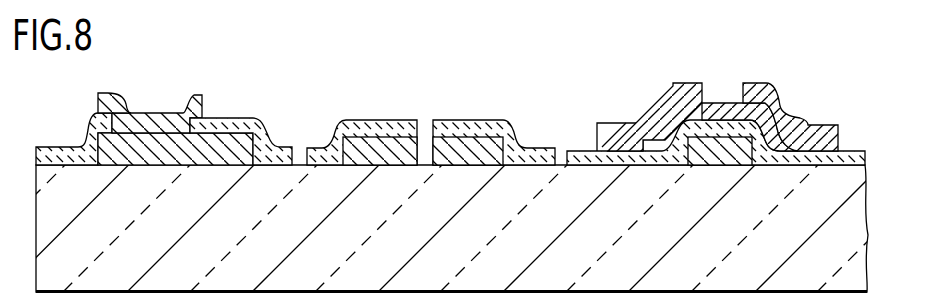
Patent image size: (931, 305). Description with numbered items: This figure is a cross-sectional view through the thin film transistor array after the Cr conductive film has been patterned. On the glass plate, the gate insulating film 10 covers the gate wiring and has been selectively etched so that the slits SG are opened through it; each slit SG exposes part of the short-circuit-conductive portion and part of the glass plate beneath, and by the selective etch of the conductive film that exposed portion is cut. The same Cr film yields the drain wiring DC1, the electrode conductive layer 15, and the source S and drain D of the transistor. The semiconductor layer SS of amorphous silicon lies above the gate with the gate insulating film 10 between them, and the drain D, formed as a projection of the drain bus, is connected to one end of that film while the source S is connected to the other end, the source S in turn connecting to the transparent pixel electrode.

The gate insulating film 10 is at (851, 151).
The electrode conductive layer 15 is at (121, 66).
The slit SG is at (298, 148).
The semiconductor layer SS is at (720, 110).
The drain D is at (670, 83).
The drain wiring DC1 is at (609, 130).
The source S is at (778, 107).